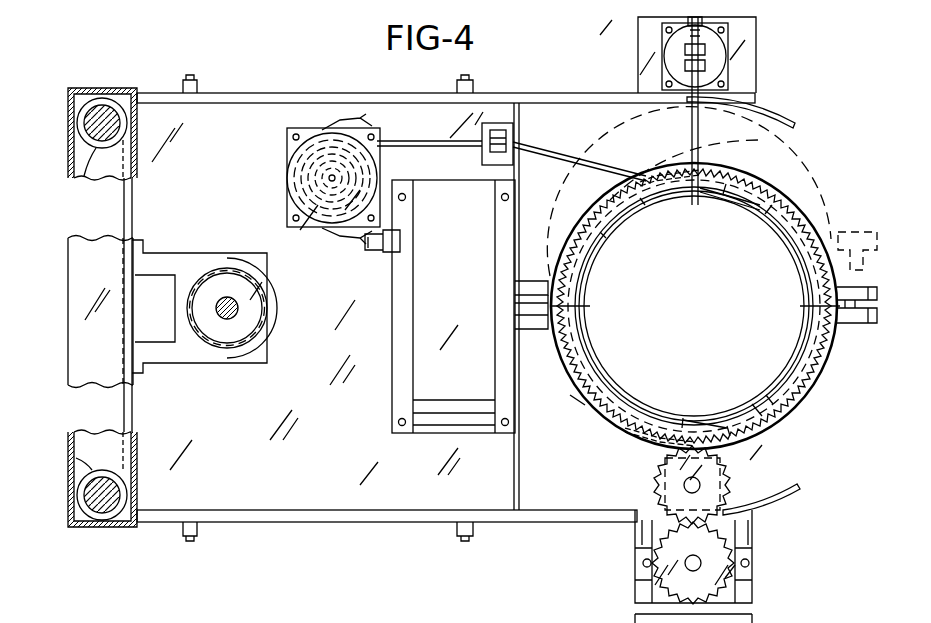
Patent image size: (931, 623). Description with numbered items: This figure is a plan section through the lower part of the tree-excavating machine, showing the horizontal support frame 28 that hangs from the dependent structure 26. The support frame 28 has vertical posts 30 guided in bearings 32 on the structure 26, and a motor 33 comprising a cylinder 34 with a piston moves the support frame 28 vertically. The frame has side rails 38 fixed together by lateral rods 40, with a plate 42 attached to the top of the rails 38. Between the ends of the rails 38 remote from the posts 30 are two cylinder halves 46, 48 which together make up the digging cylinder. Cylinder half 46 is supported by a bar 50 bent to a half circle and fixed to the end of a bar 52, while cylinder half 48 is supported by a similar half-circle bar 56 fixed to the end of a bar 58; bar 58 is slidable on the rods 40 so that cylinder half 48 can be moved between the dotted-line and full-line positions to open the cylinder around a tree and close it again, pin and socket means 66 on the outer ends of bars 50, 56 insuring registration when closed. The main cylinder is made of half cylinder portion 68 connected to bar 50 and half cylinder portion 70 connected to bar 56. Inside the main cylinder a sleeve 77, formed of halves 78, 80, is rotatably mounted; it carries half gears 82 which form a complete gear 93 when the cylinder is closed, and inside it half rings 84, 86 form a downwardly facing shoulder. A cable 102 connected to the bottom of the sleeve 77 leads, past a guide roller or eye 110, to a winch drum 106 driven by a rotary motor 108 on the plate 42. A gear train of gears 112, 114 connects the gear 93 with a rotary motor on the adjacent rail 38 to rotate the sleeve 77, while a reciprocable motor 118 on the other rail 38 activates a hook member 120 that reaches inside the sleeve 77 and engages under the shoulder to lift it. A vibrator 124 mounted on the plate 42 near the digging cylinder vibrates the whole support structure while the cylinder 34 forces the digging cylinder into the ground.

The structure 26 is at (72, 152).
The horizontal support frame 28 is at (130, 540).
The vertical posts 30 is at (92, 120).
The bearings 32 is at (88, 176).
The motor 33 is at (222, 352).
The cylinder 34 is at (218, 268).
The side rails 38 is at (232, 94).
The lateral rods 40 is at (189, 541).
The plate 42 is at (290, 512).
The cylinder half 46 is at (803, 437).
The cylinder half 48 is at (817, 172).
The bar 50 is at (593, 425).
The bar 52 is at (542, 332).
The bar 56 is at (590, 206).
The bar 58 is at (531, 281).
The pin and socket means 66 is at (862, 338).
The half cylinder portion 68 is at (752, 410).
The half cylinder portion 70 is at (745, 200).
The sleeve 77 is at (648, 200).
The sleeve half 78 is at (684, 420).
The sleeve half 80 is at (612, 236).
The half gears 82 is at (650, 176).
The half ring 84 is at (805, 350).
The half ring 86 is at (592, 292).
The gear 93 is at (582, 400).
The cable 102 is at (560, 153).
The winch drum 106 is at (293, 178).
The rotary motor 108 is at (340, 236).
The guide roller or eye 110 is at (482, 150).
The gear 112 is at (715, 482).
The gear 114 is at (718, 552).
The reciprocable motor 118 is at (682, 50).
The hook member 120 is at (690, 118).
The vibrator 124 is at (430, 306).